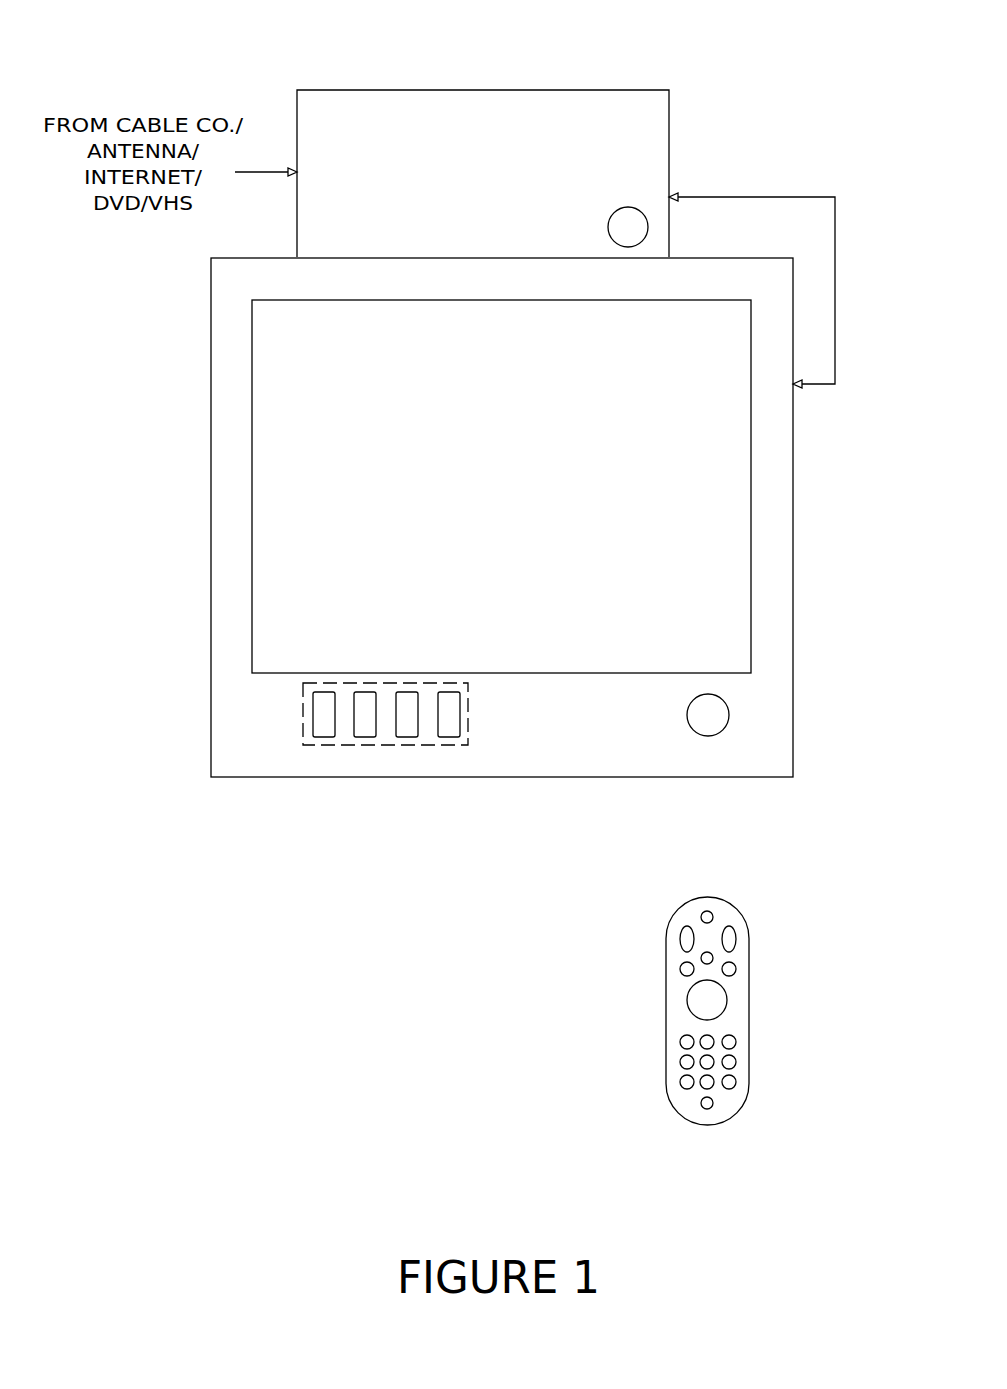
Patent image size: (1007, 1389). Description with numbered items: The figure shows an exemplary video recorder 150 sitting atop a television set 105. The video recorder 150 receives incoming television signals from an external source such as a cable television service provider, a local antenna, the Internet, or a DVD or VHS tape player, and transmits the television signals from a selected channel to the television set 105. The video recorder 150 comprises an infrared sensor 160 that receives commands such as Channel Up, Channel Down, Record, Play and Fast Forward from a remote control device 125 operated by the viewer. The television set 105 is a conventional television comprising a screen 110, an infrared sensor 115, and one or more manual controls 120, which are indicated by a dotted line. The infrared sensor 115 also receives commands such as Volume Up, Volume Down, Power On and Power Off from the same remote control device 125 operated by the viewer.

The video recorder 150 is at (317, 81).
The infrared (IR) sensor 160 is at (598, 226).
The television set 105 is at (802, 467).
The screen 110 is at (760, 570).
The infrared (IR) sensor 115 is at (708, 745).
The manual controls 120 is at (372, 756).
The remote control device 125 is at (759, 1010).